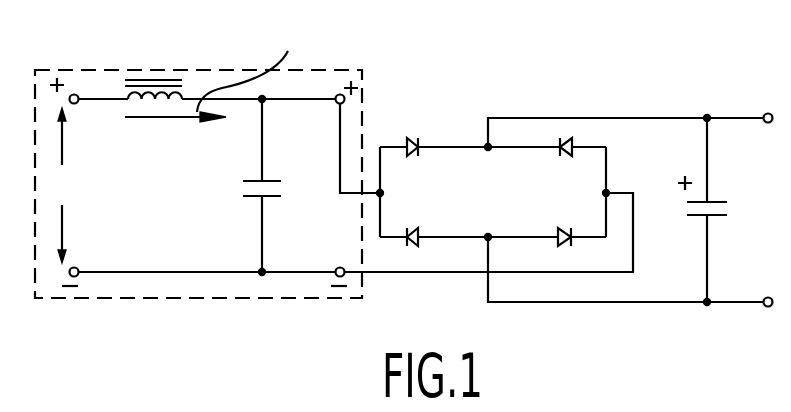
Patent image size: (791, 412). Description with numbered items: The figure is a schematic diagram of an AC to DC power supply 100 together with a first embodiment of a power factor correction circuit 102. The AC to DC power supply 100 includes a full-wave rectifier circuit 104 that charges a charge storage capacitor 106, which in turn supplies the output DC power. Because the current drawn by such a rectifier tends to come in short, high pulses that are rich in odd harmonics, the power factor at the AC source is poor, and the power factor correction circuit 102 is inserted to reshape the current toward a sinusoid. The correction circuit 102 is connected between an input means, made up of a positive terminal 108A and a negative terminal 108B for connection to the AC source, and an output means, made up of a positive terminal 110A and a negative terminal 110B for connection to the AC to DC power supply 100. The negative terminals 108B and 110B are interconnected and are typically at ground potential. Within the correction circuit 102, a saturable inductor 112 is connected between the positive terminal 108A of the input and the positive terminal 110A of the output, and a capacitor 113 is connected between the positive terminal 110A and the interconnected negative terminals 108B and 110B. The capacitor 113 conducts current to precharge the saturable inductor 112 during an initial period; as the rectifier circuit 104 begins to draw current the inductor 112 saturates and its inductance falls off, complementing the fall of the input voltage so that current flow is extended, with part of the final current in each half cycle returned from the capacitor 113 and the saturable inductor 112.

The AC to DC power supply 100 is at (316, 340).
The power factor correction circuit 102 is at (365, 108).
The full-wave rectifier circuit 104 is at (517, 208).
The charge storage capacitor 106 is at (713, 217).
The positive terminal 108A is at (76, 103).
The negative terminal 108B is at (77, 264).
The positive terminal 110A is at (337, 104).
The negative terminal 110B is at (336, 268).
The saturable inductor 112 is at (195, 101).
The capacitor 113 is at (245, 181).